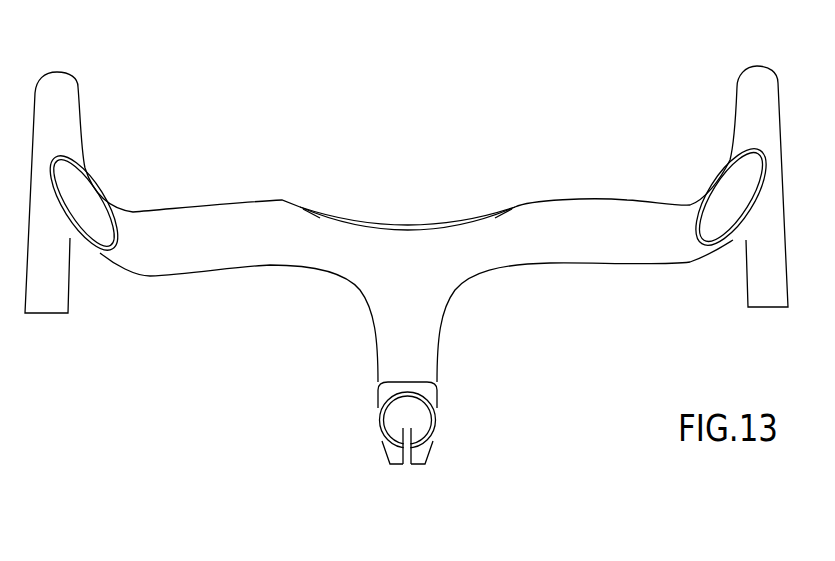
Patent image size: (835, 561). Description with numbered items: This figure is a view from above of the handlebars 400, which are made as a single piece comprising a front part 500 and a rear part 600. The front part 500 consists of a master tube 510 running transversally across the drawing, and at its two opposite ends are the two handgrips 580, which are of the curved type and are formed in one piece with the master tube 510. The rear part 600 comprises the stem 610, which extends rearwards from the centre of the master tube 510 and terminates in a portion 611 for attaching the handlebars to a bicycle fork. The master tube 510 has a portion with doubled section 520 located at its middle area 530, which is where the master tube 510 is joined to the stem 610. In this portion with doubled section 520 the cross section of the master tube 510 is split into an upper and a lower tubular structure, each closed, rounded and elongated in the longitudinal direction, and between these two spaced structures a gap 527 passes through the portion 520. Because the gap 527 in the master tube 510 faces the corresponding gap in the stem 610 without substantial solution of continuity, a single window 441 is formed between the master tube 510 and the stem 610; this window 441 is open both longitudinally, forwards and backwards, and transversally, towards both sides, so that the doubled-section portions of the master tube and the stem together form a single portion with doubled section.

The handlebars 400 is at (406, 274).
The front part 500 is at (406, 224).
The master tube 510 is at (185, 233).
The portion with doubled section 520 is at (402, 168).
The gap 527 is at (310, 209).
The middle area 530 is at (409, 199).
The window 441 is at (498, 209).
The handgrips 580 is at (52, 298).
The rear part 600 is at (367, 459).
The stem 610 is at (445, 383).
The portion for attaching to a bicycle fork 611 is at (386, 446).